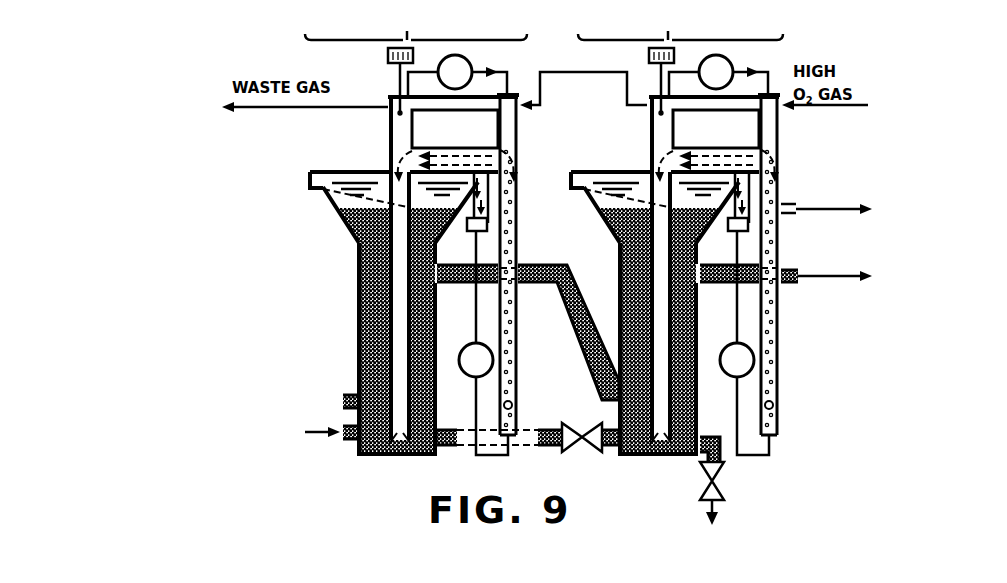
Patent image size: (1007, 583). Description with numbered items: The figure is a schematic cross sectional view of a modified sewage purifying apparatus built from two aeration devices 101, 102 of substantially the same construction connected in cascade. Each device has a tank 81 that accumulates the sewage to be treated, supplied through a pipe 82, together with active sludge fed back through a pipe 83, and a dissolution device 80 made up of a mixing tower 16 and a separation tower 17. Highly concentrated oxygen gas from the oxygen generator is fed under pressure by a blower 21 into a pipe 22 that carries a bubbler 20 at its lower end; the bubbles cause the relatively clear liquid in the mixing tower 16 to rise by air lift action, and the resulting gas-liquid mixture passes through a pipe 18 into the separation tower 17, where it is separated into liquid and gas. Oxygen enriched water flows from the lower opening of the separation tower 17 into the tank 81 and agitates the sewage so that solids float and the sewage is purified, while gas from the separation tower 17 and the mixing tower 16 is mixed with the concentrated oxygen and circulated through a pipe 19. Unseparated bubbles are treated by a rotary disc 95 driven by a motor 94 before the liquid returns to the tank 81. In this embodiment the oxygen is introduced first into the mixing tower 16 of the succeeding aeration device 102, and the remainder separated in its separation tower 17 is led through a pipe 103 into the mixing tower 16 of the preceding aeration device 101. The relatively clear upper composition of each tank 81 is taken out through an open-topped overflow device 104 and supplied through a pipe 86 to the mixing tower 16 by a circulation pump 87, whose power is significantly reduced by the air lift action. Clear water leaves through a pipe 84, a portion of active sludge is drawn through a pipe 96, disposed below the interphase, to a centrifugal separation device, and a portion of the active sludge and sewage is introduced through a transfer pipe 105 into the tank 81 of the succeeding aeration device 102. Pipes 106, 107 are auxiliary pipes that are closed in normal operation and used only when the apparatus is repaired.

The preceding aeration device 101 is at (416, 26).
The succeeding aeration device 102 is at (680, 26).
The pipe 103 is at (572, 56).
The overflow device 104 is at (310, 180).
The transfer pipe 105 is at (568, 267).
The auxiliary pipe 106 is at (556, 448).
The auxiliary pipe 107 is at (714, 440).
The mixing tower 16 is at (517, 316).
The separation tower 17 is at (415, 302).
The pipe 18 is at (448, 146).
The pipe 19 is at (457, 113).
The bubbler 20 is at (513, 404).
The blower 21 is at (472, 52).
The pipe 22 is at (517, 350).
The dissolution device 80 is at (655, 265).
The tank 81 is at (365, 455).
The pipe 82 is at (352, 394).
The pipe 83 is at (352, 441).
The pipe 84 is at (785, 216).
The pipe 86 is at (476, 343).
The circulation pump 87 is at (464, 372).
The motor 94 is at (390, 60).
The rotary disc 95 is at (397, 113).
The pipe 96 is at (784, 282).